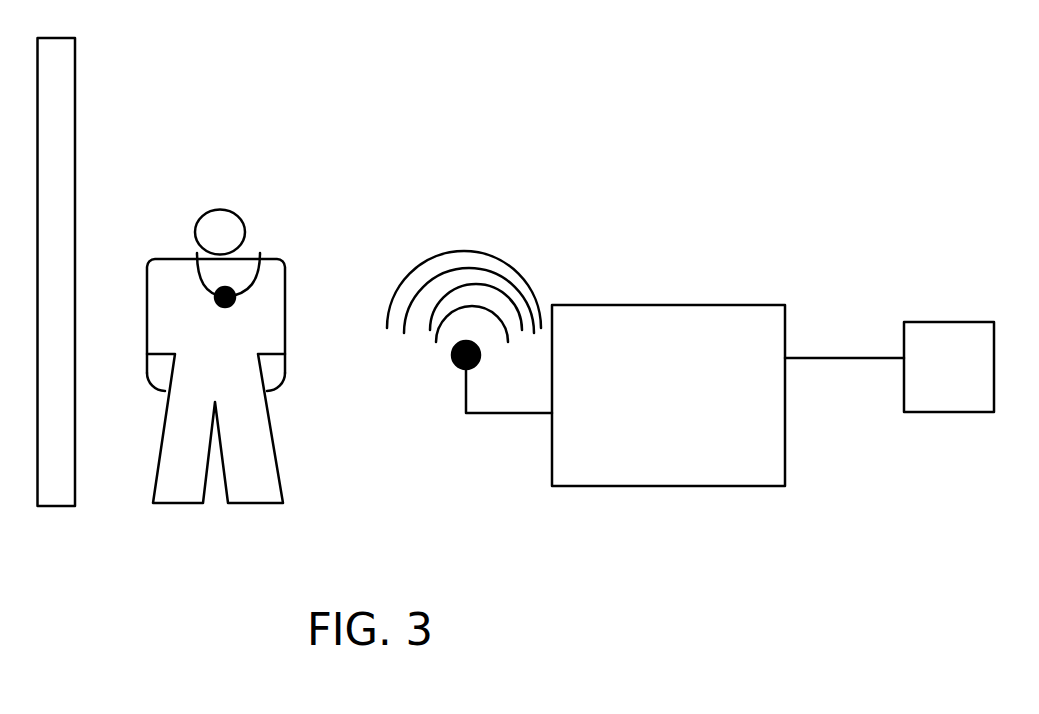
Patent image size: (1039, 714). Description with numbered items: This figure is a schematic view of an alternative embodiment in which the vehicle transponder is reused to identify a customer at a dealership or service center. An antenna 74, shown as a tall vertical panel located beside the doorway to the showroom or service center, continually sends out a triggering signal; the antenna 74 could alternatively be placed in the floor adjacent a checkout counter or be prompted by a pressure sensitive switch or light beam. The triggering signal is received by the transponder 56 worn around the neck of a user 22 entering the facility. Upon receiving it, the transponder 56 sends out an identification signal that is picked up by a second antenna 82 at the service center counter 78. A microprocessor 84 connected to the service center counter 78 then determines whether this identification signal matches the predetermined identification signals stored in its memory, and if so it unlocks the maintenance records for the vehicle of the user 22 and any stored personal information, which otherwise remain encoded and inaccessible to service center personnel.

The user 22 is at (260, 258).
The transponder 56 is at (233, 294).
The antenna 74 is at (75, 108).
The service center counter 78 is at (776, 305).
The antenna 82 is at (478, 345).
The microprocessor 84 is at (922, 322).